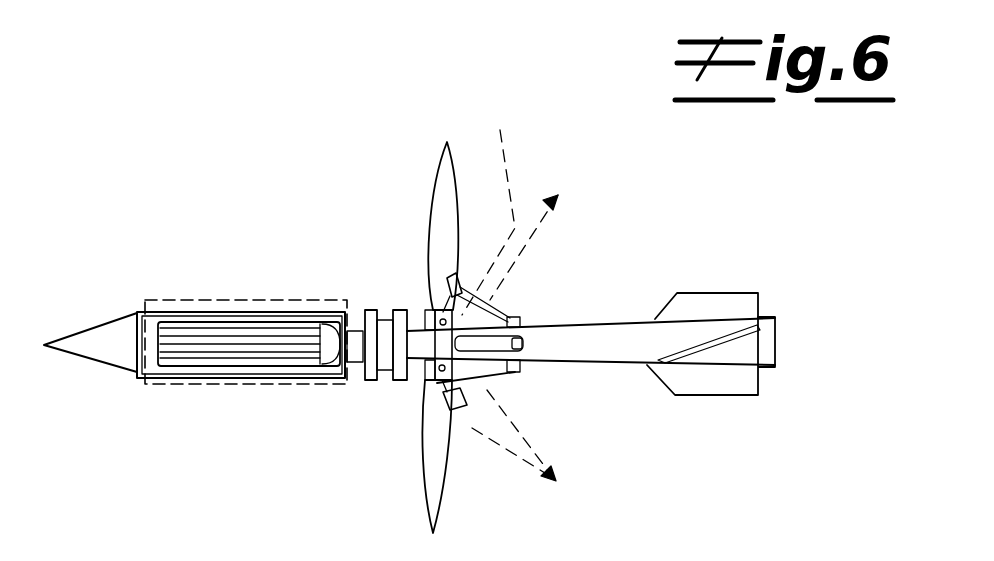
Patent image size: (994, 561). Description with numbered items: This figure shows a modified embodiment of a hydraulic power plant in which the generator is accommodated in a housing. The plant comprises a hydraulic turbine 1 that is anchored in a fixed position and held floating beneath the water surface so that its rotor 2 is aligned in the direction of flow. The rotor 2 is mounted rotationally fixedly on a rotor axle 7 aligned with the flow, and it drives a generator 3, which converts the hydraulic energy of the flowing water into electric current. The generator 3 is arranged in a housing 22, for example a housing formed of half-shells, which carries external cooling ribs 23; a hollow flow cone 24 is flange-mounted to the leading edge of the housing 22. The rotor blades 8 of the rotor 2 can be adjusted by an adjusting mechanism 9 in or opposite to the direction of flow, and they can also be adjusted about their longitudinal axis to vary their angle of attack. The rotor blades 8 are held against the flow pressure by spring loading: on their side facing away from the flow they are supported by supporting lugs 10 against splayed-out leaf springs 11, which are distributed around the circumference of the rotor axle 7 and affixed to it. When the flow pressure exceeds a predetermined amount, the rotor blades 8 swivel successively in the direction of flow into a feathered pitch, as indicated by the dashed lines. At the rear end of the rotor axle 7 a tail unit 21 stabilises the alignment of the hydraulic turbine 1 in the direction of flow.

The hydraulic turbine 1 is at (350, 147).
The rotor 2 is at (423, 487).
The generator 3 is at (187, 330).
The rotor axle 7 is at (555, 335).
The rotor blades 8 is at (447, 177).
The adjusting mechanism 9 is at (507, 287).
The supporting lugs 10 is at (465, 408).
The leaf springs 11 is at (488, 378).
The tail unit 21 is at (735, 285).
The housing 22 is at (247, 383).
The cooling ribs 23 is at (192, 383).
The hollow flow cone 24 is at (105, 353).